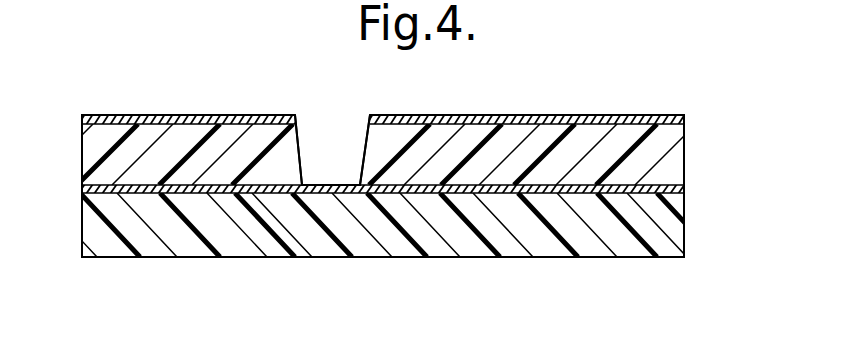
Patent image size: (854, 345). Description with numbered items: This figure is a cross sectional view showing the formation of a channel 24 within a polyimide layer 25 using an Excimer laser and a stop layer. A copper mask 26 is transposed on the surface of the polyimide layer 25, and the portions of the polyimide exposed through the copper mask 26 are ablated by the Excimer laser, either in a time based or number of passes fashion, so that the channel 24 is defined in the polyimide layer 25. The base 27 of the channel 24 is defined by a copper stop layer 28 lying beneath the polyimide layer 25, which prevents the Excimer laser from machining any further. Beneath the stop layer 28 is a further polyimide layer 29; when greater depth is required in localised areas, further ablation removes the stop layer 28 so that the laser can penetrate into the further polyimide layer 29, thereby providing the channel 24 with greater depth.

The channel 24 is at (346, 126).
The polyimide layer 25 is at (675, 167).
The copper mask 26 is at (200, 115).
The base 27 is at (310, 184).
The copper stop layer 28 is at (82, 188).
The further polyimide layer 29 is at (675, 227).